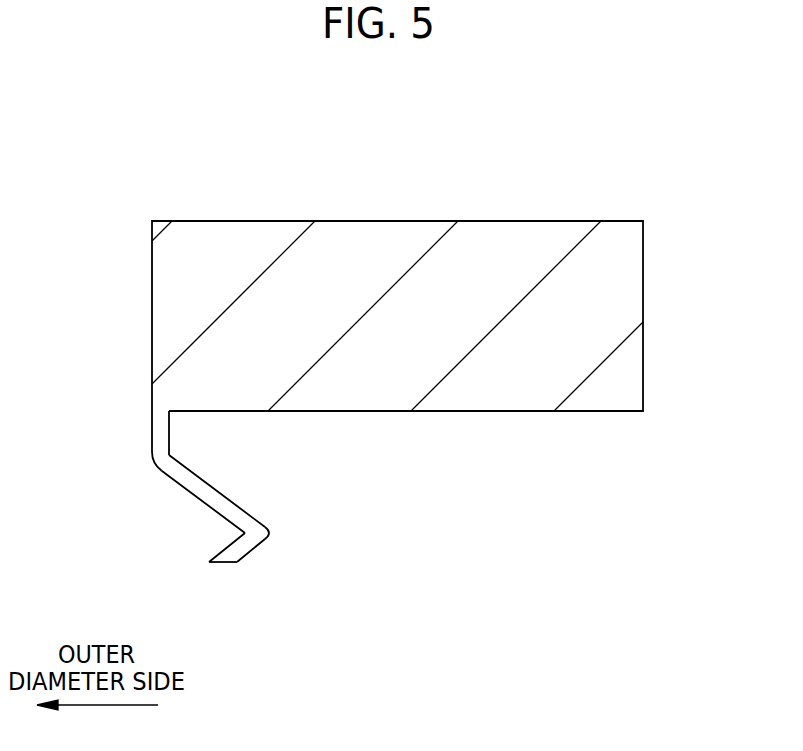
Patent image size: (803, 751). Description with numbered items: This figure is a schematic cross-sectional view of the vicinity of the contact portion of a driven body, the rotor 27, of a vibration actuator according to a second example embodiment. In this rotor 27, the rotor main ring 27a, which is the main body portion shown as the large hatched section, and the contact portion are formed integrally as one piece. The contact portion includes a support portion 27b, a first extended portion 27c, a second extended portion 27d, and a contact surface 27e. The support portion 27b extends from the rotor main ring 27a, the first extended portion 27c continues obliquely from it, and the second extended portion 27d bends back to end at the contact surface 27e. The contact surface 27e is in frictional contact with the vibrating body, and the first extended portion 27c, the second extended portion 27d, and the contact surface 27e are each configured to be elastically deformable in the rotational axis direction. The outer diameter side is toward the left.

The rotor 27 is at (515, 143).
The rotor main ring 27a is at (342, 243).
The support portion 27b is at (162, 432).
The first extended portion 27c is at (192, 478).
The second extended portion 27d is at (245, 548).
The contact surface 27e is at (225, 563).